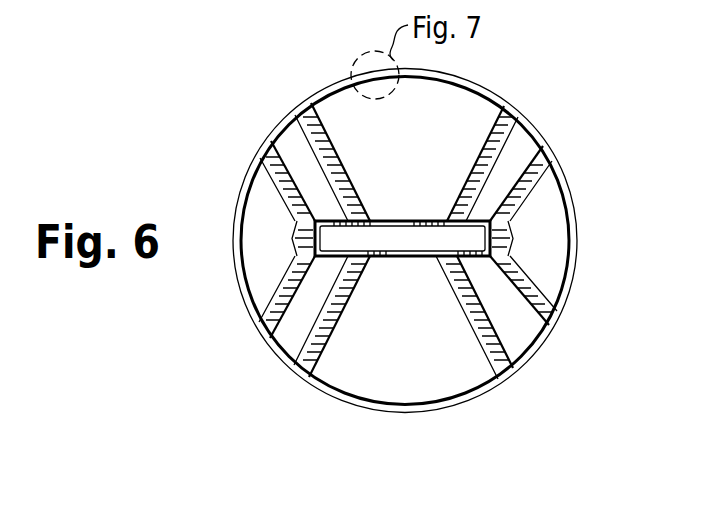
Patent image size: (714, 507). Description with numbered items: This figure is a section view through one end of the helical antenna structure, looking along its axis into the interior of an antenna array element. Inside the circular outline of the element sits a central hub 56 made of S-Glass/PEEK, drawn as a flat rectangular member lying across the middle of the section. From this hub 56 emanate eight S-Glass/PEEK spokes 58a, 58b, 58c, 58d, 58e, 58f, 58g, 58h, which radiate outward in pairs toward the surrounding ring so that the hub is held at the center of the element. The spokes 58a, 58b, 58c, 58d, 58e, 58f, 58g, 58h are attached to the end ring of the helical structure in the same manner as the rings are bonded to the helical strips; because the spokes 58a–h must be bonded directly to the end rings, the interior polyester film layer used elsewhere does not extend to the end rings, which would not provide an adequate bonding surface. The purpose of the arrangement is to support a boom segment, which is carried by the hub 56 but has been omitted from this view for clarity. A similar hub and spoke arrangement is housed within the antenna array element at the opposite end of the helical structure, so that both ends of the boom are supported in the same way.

The hub 56 is at (410, 257).
The spoke 58a is at (276, 180).
The spoke 58b is at (305, 118).
The spoke 58c is at (510, 106).
The spoke 58d is at (546, 165).
The spoke 58e is at (552, 336).
The spoke 58f is at (514, 370).
The spoke 58g is at (300, 365).
The spoke 58h is at (268, 336).